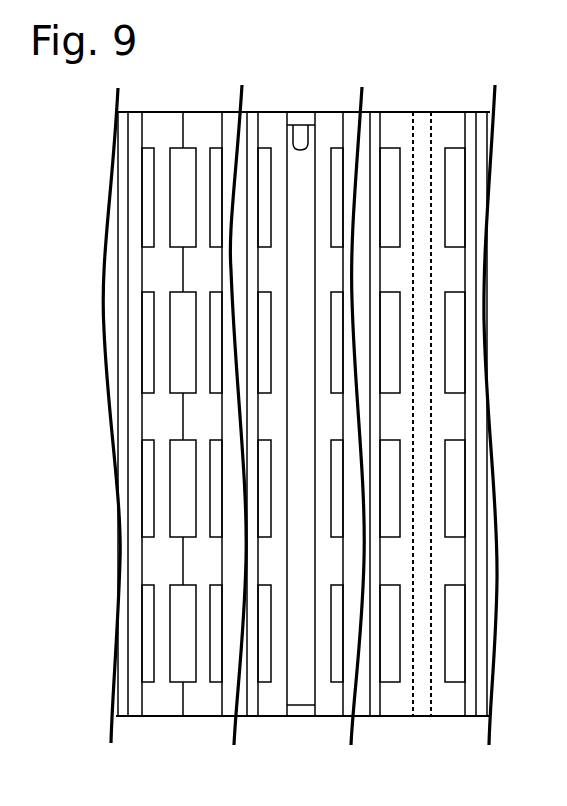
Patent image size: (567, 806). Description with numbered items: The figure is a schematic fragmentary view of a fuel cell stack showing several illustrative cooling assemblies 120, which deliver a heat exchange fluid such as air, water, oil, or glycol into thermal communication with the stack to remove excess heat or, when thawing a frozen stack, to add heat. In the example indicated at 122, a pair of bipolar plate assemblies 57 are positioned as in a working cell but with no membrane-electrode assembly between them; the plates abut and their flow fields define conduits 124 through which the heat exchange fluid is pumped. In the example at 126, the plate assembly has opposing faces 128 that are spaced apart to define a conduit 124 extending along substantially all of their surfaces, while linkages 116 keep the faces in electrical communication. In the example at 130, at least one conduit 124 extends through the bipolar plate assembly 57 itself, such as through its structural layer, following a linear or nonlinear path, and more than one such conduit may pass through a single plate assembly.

The bipolar plate assembly 57 is at (202, 109).
The linkage 116 is at (298, 112).
The cooling assembly 120 is at (148, 729).
The pair of abutting bipolar plate assemblies 122 is at (176, 726).
The conduit 124 is at (300, 427).
The plate assembly with opposing faces 126 is at (310, 729).
The opposing face 128 is at (308, 158).
The plate assembly with internal conduit 130 is at (422, 729).